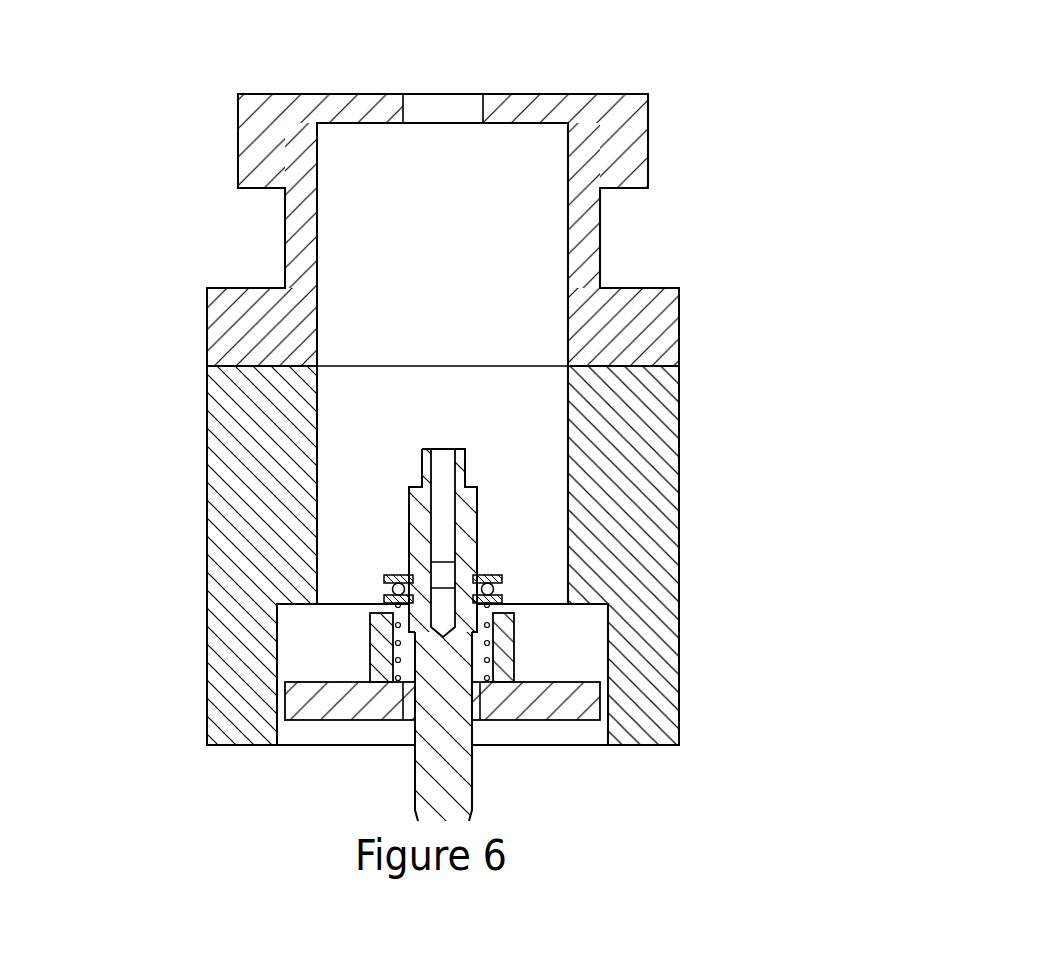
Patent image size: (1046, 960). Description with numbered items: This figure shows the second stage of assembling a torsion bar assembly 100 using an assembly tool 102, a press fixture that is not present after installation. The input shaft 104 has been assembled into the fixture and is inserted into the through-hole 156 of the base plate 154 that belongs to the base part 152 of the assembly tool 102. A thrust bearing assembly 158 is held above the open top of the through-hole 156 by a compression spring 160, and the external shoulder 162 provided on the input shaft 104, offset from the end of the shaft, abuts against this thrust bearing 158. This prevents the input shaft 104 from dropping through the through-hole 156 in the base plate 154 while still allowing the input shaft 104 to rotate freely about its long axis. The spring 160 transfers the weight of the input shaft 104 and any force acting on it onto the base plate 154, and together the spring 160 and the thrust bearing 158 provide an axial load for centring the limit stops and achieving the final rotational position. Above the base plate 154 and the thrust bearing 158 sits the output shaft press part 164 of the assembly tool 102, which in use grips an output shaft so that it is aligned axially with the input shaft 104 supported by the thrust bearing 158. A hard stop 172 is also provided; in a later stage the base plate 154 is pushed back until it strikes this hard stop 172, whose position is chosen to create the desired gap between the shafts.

The torsion bar assembly 100 is at (277, 765).
The assembly tool 102 is at (414, 427).
The input shaft 104 is at (470, 792).
The base part 152 is at (348, 652).
The base plate 154 is at (600, 698).
The through-hole 156 is at (480, 717).
The thrust bearing assembly 158 is at (505, 590).
The compression spring 160 is at (517, 638).
The external shoulder 162 is at (478, 567).
The output shaft press part 164 is at (563, 94).
The hard stop 172 is at (297, 600).